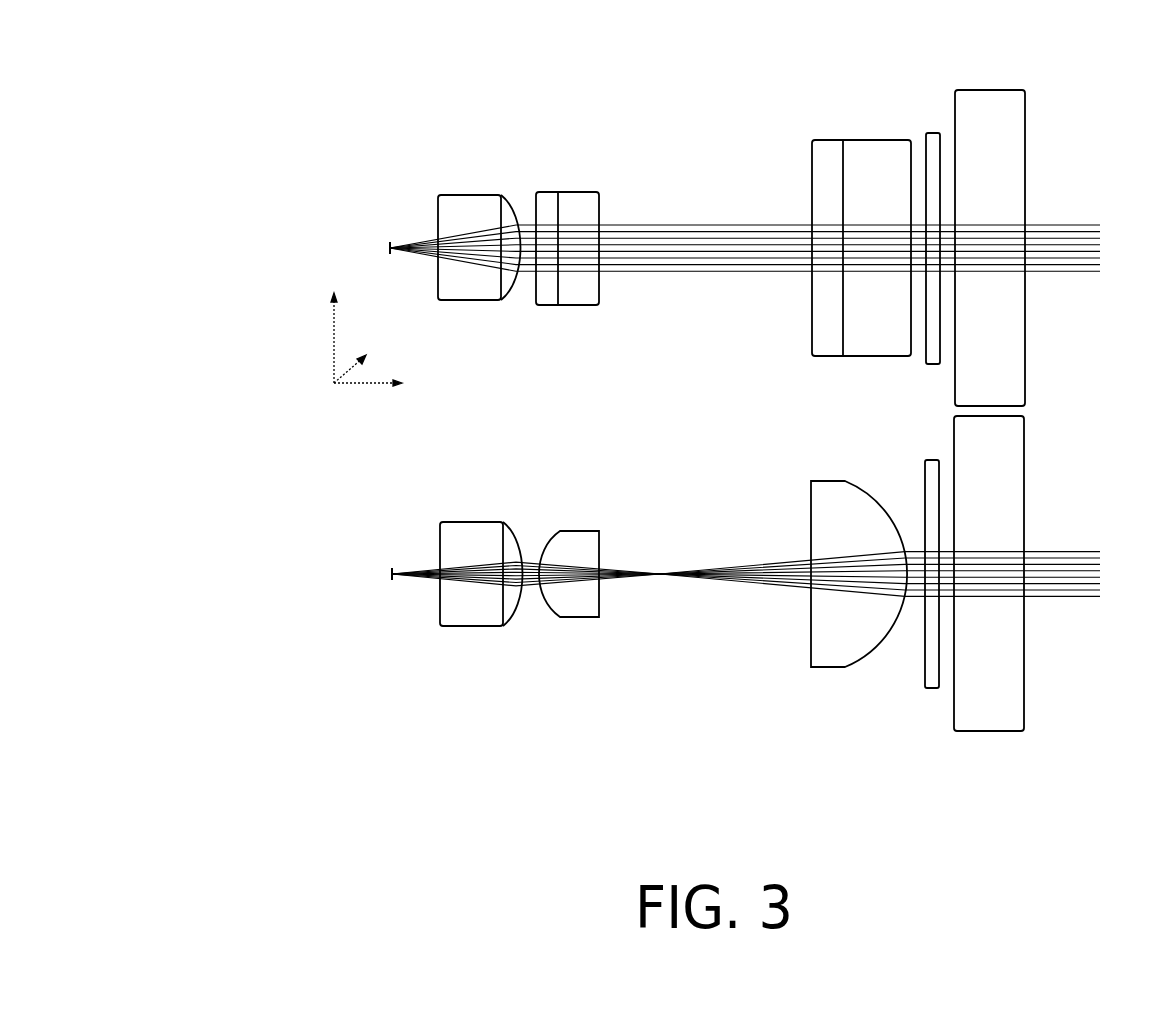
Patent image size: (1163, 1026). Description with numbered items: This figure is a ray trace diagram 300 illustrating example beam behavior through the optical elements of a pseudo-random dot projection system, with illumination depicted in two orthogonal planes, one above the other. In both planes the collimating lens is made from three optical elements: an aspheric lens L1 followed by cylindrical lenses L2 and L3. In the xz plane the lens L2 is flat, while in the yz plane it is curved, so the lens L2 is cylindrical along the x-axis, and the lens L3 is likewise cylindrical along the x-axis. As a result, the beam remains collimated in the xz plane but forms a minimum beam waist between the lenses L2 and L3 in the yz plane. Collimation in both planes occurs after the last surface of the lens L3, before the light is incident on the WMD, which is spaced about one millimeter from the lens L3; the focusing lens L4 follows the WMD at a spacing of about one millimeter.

The ray trace diagram 300 is at (239, 56).
The aspheric lens L1 is at (471, 281).
The cylindrical lens L2 is at (584, 300).
The cylindrical lens L3 is at (855, 349).
The focusing lens L4 is at (1011, 180).
The element WMD is at (925, 180).